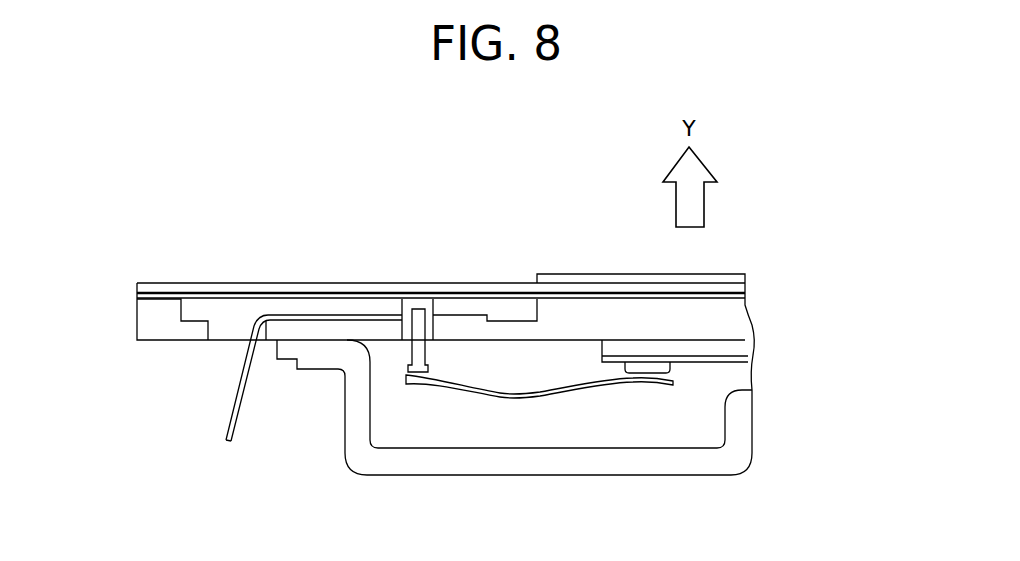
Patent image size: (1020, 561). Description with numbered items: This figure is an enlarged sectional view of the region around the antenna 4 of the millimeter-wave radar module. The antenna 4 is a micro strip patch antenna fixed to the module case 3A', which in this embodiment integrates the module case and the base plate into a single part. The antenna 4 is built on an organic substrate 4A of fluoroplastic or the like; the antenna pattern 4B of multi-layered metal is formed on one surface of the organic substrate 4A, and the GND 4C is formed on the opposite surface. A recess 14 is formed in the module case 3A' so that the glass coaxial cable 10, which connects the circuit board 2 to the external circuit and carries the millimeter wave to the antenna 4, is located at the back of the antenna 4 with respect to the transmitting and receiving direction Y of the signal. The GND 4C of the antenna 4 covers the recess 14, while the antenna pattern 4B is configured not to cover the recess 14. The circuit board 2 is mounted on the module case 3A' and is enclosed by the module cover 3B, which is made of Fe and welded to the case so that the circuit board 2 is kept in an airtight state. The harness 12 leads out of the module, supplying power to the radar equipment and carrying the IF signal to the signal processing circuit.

The circuit board 2 is at (742, 352).
The module case 3A' is at (775, 336).
The module cover 3B is at (628, 467).
The antenna 4 is at (578, 212).
The organic substrate 4A is at (528, 286).
The antenna pattern 4B is at (569, 279).
The GND 4C is at (485, 297).
The glass coaxial cable 10 is at (403, 333).
The harness 12 is at (231, 409).
The recess 14 is at (244, 310).